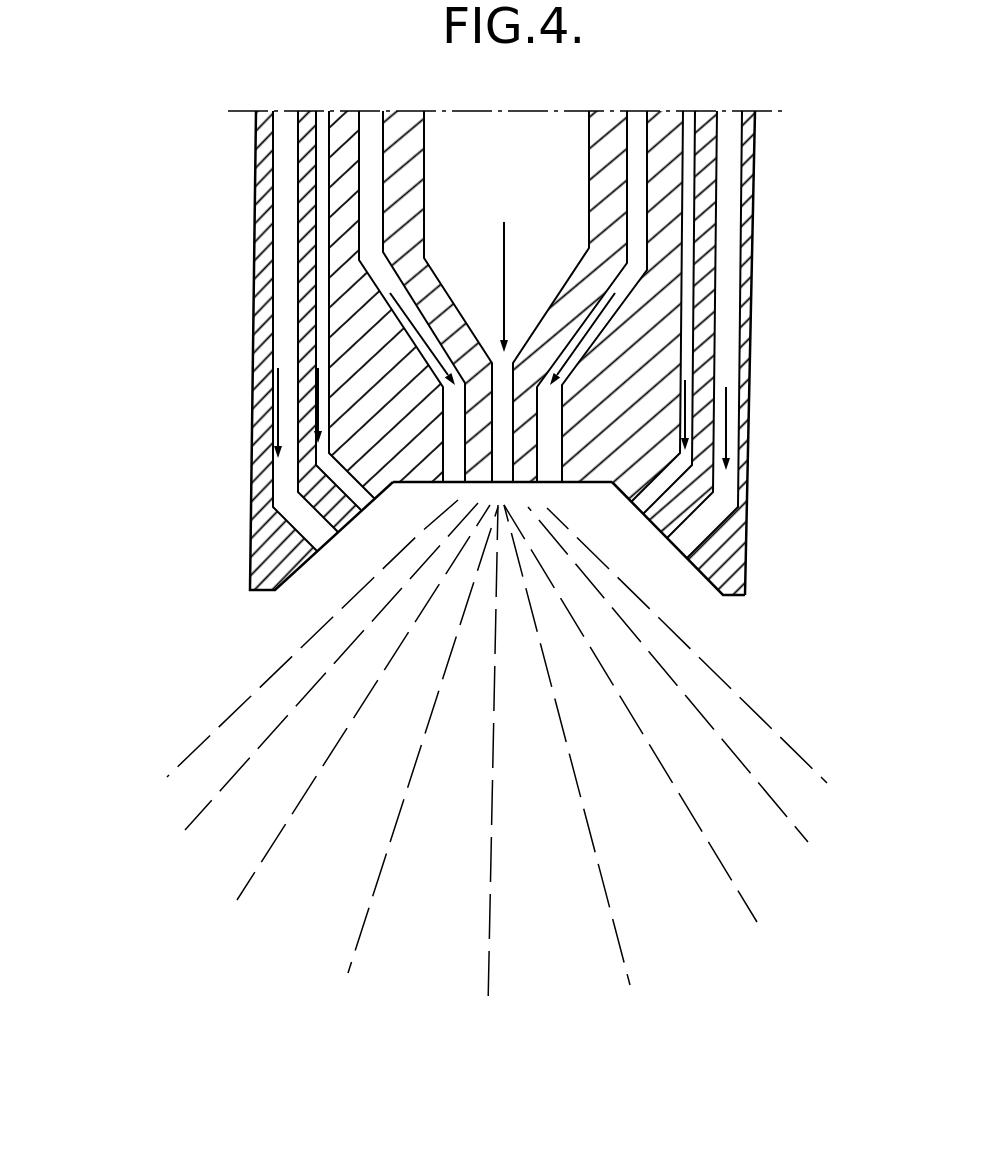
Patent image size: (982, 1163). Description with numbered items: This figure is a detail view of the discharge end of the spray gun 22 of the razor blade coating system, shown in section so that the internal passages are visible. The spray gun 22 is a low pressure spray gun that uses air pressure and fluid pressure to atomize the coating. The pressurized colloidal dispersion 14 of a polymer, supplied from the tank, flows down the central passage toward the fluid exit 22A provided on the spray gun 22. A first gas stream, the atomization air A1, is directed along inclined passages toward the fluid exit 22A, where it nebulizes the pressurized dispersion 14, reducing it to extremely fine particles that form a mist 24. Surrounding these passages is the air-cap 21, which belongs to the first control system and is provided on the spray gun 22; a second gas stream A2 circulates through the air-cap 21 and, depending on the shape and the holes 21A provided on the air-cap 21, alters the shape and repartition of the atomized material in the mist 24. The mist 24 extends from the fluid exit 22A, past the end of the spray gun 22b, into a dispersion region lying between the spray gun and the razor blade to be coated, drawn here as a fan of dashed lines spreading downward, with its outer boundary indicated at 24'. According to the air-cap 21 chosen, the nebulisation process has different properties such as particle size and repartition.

The colloidal dispersion 14 is at (504, 262).
The air-cap 21 is at (730, 575).
The holes 21A is at (650, 500).
The spray gun 22 is at (270, 153).
The fluid exit 22A is at (512, 488).
The end of the spray gun 22b is at (740, 597).
The mist 24 is at (493, 755).
The spray boundary 24' is at (269, 638).
The atomization air A1 is at (393, 313).
The second gas stream A2 is at (685, 420).